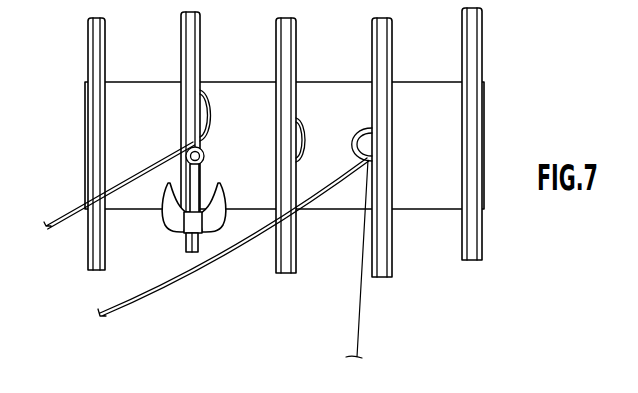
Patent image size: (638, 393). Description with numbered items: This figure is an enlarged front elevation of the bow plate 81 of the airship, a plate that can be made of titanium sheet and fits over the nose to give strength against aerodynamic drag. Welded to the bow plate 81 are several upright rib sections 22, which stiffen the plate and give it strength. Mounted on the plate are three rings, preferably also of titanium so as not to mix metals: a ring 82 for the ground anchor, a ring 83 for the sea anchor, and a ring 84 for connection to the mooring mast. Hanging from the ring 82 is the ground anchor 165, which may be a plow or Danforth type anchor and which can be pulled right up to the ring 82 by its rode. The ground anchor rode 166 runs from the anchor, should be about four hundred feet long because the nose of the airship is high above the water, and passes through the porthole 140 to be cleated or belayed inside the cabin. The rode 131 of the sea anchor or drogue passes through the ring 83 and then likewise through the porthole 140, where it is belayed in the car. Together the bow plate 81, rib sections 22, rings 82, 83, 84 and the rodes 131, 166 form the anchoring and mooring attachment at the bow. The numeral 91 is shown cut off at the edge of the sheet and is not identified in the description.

The rib sections 22 is at (482, 32).
The bow plate 81 is at (163, 82).
The ring 82 is at (206, 94).
The ring 83 is at (355, 128).
The ring 84 is at (303, 126).
The rode 131 is at (204, 268).
The ground anchor 165 is at (200, 172).
The ground anchor rode 166 is at (48, 222).
The porthole 140 is at (185, 389).
The element 91 is at (620, 389).